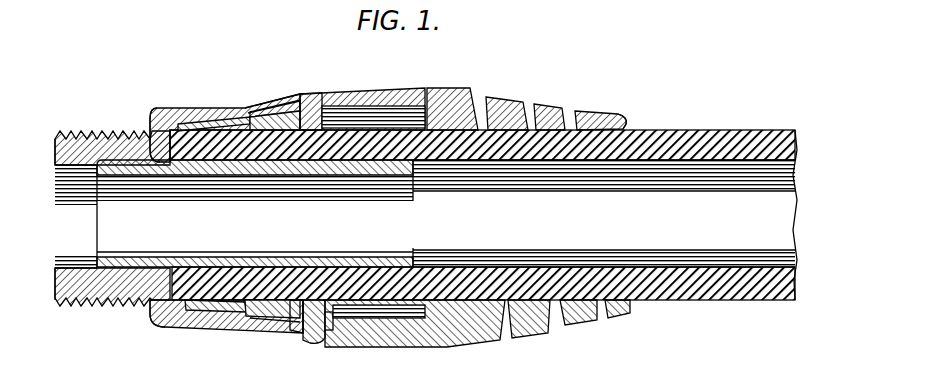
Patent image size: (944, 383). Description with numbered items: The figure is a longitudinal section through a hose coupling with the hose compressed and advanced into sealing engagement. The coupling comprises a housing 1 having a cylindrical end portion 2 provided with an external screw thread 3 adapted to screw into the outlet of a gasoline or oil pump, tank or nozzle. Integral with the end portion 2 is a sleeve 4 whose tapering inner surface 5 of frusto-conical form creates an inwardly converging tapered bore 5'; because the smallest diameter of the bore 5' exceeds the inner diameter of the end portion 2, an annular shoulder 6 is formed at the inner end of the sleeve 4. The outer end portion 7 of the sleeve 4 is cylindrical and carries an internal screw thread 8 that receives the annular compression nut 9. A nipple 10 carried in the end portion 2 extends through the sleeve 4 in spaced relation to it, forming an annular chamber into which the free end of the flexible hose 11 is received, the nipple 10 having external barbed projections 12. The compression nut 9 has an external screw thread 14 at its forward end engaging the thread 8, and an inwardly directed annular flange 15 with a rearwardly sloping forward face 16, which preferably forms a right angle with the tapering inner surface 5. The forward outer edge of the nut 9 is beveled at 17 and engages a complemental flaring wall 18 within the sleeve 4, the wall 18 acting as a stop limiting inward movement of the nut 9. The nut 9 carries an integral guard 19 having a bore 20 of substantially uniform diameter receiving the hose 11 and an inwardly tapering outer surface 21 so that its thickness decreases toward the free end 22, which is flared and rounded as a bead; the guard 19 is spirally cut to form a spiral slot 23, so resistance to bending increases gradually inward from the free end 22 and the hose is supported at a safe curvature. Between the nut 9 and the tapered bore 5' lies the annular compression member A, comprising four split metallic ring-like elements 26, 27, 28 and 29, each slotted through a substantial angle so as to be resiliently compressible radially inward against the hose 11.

The housing 1 is at (181, 104).
The cylindrical end portion 2 is at (57, 136).
The external screw thread 3 is at (98, 138).
The sleeve 4 is at (262, 104).
The tapering inner surface 5 is at (214, 104).
The tapered bore 5' is at (140, 323).
The annular shoulder 6 is at (164, 112).
The outer end portion 7 is at (330, 96).
The internal screw thread 8 is at (374, 94).
The compression nut 9 is at (456, 88).
The nipple 10 is at (150, 258).
The flexible hose 11 is at (652, 128).
The barbed projections 12 is at (294, 262).
The external screw thread 14 is at (350, 350).
The annular flange 15 is at (314, 342).
The forward face 16 is at (286, 325).
The beveled edge 17 is at (310, 110).
The flaring wall 18 is at (298, 115).
The guard 19 is at (506, 98).
The bore 20 is at (561, 265).
The tapering outer surface 21 is at (555, 106).
The free end 22 is at (626, 116).
The spiral slot 23 is at (590, 112).
The ring-like element 26 is at (178, 328).
The ring-like element 27 is at (214, 330).
The ring-like element 28 is at (270, 330).
The ring-like element 29 is at (247, 330).
The compression member A is at (247, 110).